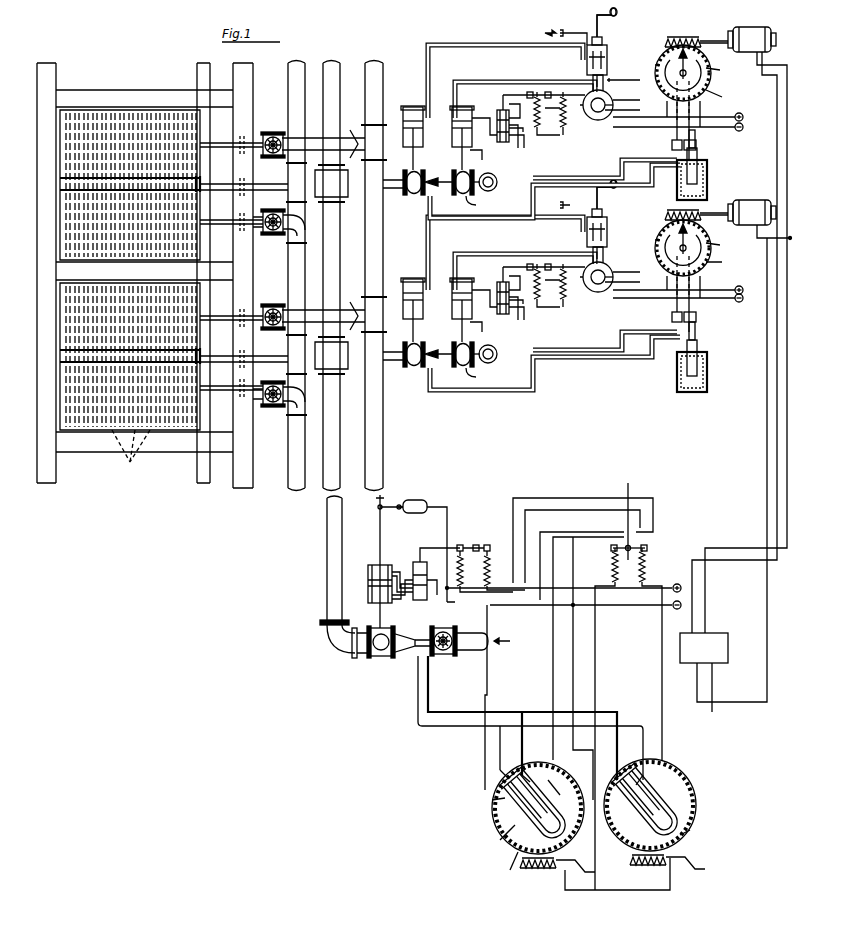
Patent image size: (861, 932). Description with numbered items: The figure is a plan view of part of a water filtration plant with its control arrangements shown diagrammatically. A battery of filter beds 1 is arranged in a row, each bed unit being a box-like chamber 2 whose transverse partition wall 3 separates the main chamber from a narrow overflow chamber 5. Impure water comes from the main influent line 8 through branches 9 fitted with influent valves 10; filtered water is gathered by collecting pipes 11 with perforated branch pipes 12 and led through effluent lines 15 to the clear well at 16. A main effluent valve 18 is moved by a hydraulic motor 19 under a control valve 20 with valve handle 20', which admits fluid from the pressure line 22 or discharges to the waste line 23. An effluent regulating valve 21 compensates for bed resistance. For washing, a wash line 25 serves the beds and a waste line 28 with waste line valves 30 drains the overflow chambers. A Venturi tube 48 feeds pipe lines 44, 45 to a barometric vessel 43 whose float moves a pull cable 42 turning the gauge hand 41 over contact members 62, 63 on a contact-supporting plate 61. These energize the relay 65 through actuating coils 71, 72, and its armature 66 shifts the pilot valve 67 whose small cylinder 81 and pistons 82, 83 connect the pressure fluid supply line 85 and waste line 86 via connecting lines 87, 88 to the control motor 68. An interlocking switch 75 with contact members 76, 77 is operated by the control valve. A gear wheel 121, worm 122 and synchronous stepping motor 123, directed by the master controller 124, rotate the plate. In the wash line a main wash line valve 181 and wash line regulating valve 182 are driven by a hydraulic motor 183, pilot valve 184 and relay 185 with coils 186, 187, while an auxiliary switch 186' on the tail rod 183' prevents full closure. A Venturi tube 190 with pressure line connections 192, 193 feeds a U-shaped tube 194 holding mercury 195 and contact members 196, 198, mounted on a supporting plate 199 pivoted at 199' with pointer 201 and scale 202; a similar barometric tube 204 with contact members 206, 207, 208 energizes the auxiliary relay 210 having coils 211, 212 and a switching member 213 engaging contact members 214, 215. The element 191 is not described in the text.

The filter beds 1 is at (37, 156).
The box-like chamber 2 is at (60, 326).
The transverse partition wall 3 is at (210, 147).
The overflow chamber 5 is at (231, 270).
The main influent line 8 is at (383, 70).
The branches 9 is at (313, 138).
The influent valves 10 is at (273, 133).
The collecting pipes 11 is at (60, 186).
The branch pipes 12 is at (131, 452).
The effluent lines 15 is at (283, 300).
The effluent outlet 16 is at (497, 184).
The main effluent valve 18 is at (414, 195).
The hydraulic motor 19 is at (405, 107).
The control valve 20 is at (611, 133).
The valve handle 20' is at (613, 108).
The effluent regulating valve 21 is at (483, 286).
The pressure line 22 is at (566, 110).
The waste line 23 is at (627, 79).
The wash line 25 is at (340, 448).
The waste line 28 is at (292, 478).
The waste line valves 30 is at (275, 234).
The hand 41 is at (712, 44).
The pull cable 42 is at (700, 142).
The barometric vessel 43 is at (707, 184).
The pipe line 44 is at (582, 175).
The pipe line 45 is at (556, 188).
The Venturi tube 48 is at (450, 178).
The contact-supporting plate 61 is at (706, 240).
The contact member 62 is at (660, 62).
The contact member 63 is at (721, 159).
The relay 65 is at (574, 186).
The armature 66 is at (533, 92).
The pilot valve 67 is at (498, 216).
The control motor 68 is at (452, 107).
The actuating coil 71 is at (566, 112).
The actuating coil 72 is at (548, 126).
The interlocking switch 75 is at (630, 194).
The contact members 76 is at (634, 182).
The contact members 77 is at (586, 92).
The small cylinder 81 is at (500, 110).
The piston 82 is at (517, 192).
The piston 83 is at (507, 222).
The pressure fluid supply line 85 is at (547, 208).
The waste line 86 is at (528, 238).
The connecting line 87 is at (478, 118).
The connecting line 88 is at (462, 241).
The gear wheel 121 is at (711, 80).
The worm 122 is at (683, 36).
The synchronous stepping motor 123 is at (750, 27).
The master controller 124 is at (728, 649).
The main wash line valve 181 is at (455, 656).
The wash line regulating valve 182 is at (390, 660).
The hydraulic motor 183 is at (371, 572).
The tail rod 183' is at (350, 561).
The pilot valve 184 is at (414, 562).
The relay 185 is at (486, 545).
The closing coil 186 is at (559, 605).
The auxiliary switch 186' is at (427, 532).
The actuating coil 187 is at (492, 558).
The Venturi tube 190 is at (386, 630).
The pointer 191 is at (556, 795).
The pressure line connection 192 is at (450, 712).
The pressure line connection 193 is at (444, 726).
The U-shaped tube 194 is at (492, 800).
The mercury 195 is at (536, 806).
The contact member 196 is at (500, 840).
The contact member 198 is at (595, 868).
The supporting plate 199 is at (515, 808).
The pivot 199' is at (500, 871).
The pointer 201 is at (538, 775).
The scale 202 is at (500, 772).
The barometric tube 204 is at (675, 775).
The contact member 206 is at (622, 838).
The contact member 207 is at (690, 795).
The contact member 208 is at (695, 832).
The auxiliary relay 210 is at (648, 548).
The actuating coil 211 is at (610, 561).
The actuating coil 212 is at (650, 561).
The switching member 213 is at (629, 514).
The contact members 214 is at (612, 532).
The contact members 215 is at (650, 525).